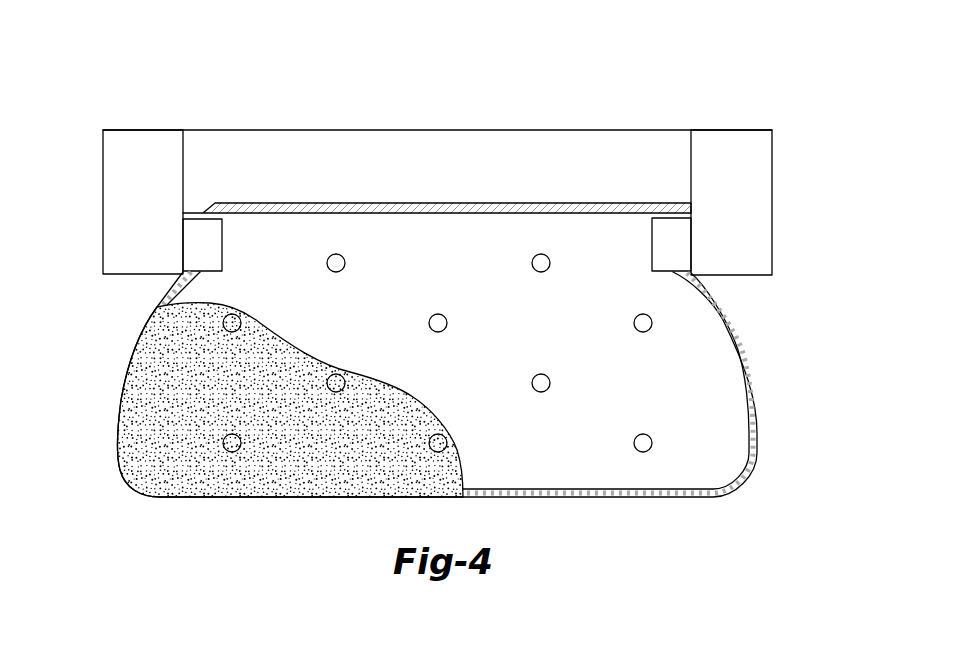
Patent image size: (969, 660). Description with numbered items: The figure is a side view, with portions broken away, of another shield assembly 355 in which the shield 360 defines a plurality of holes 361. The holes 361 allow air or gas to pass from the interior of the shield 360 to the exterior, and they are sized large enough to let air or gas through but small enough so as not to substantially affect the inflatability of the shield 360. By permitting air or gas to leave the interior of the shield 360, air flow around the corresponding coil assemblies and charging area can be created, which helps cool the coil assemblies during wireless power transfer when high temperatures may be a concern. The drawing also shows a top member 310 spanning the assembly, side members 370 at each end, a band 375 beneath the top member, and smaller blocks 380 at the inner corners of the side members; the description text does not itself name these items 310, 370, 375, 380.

The cap / top plate 310 is at (447, 150).
The shield assembly 355 is at (743, 86).
The shield 360 is at (750, 392).
The holes 361 is at (337, 255).
The side blocks 370 is at (125, 171).
The sealing band / layer 375 is at (223, 225).
The spacer blocks 380 is at (197, 235).